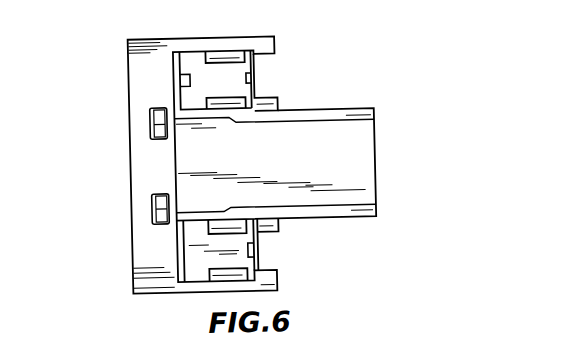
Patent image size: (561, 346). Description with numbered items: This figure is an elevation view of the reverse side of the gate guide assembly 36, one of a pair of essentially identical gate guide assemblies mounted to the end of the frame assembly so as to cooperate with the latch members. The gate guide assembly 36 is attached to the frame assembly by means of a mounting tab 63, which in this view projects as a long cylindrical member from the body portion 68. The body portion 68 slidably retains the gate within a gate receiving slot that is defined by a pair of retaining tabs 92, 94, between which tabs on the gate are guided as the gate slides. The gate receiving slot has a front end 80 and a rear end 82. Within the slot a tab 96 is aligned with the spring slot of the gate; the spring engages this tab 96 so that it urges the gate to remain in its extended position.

The gate guide assembly 36 is at (108, 42).
The mounting tab 63 is at (376, 193).
The body portion 68 is at (130, 161).
The front end 80 is at (257, 88).
The rear end 82 is at (130, 64).
The retaining tab 92 is at (259, 66).
The retaining tab 94 is at (208, 96).
The tab 96 is at (190, 71).